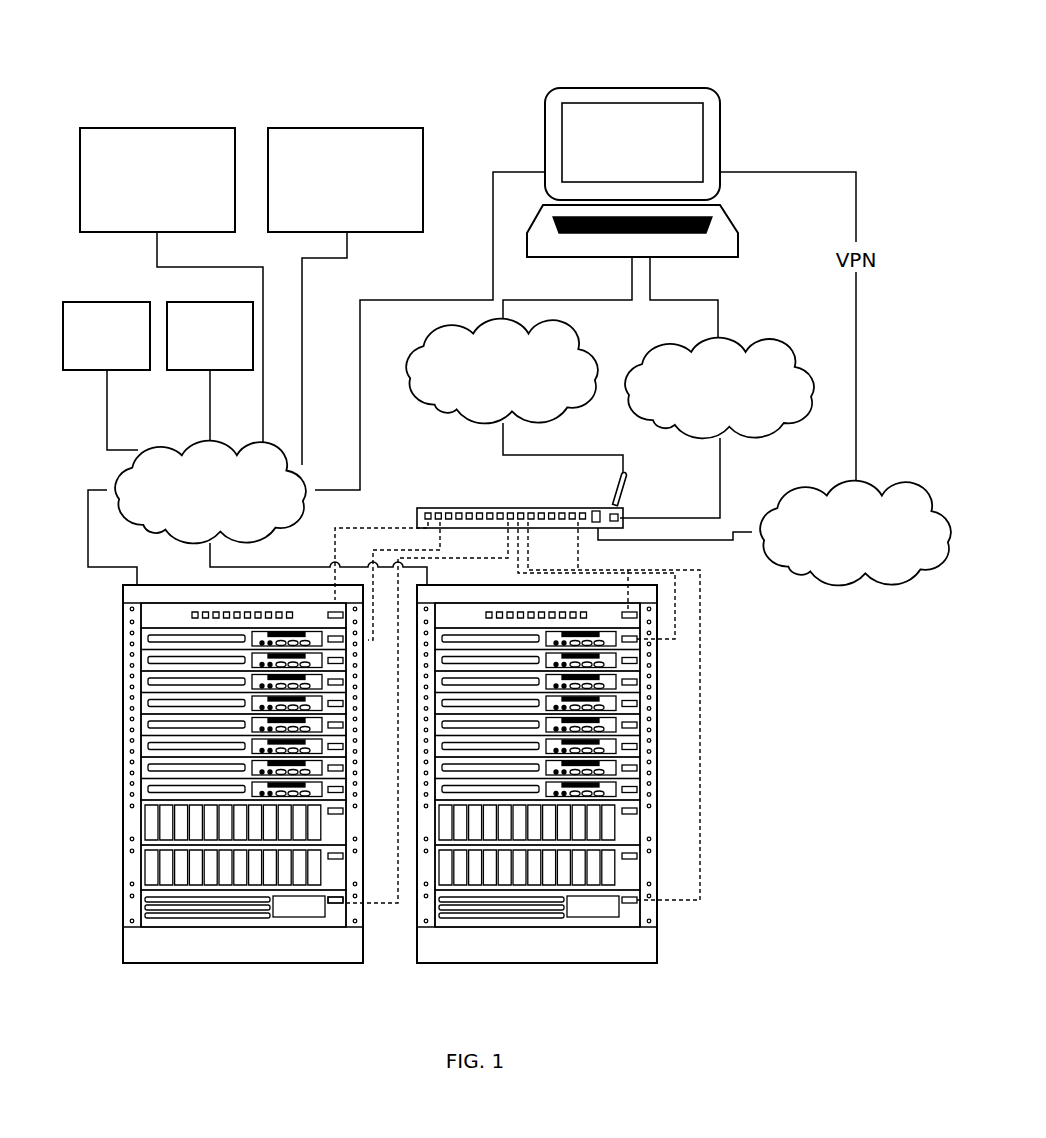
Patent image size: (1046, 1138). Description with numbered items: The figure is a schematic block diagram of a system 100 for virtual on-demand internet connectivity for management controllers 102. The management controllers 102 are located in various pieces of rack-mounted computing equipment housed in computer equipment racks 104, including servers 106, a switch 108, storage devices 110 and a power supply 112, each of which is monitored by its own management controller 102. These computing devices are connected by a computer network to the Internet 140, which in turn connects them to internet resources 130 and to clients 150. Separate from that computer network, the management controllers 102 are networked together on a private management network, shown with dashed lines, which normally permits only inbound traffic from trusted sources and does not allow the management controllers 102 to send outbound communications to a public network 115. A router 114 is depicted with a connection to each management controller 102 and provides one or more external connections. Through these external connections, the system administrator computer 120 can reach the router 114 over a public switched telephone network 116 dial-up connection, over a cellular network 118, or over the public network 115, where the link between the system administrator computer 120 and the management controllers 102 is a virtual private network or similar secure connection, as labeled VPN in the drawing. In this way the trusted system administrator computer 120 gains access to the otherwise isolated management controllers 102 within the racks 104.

The system 100 is at (122, 71).
The management controller 102 is at (342, 905).
The computer equipment rack 104 is at (203, 804).
The server 106 is at (125, 689).
The switch 108 is at (125, 622).
The storage device 110 is at (125, 829).
The power supply 112 is at (125, 911).
The router 114 is at (520, 508).
The public network 115 is at (876, 576).
The public switched telephone network 116 is at (701, 414).
The cellular network 118 is at (484, 396).
The system administrator computer 120 is at (613, 82).
The internet resource 130 is at (176, 221).
The Internet 140 is at (192, 516).
The client 150 is at (126, 361).